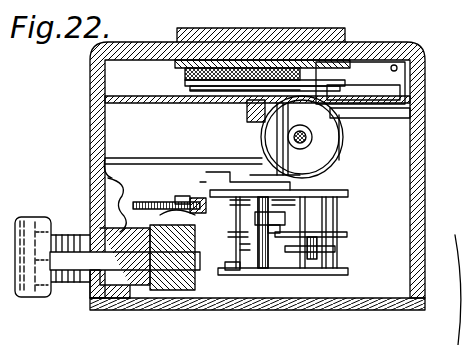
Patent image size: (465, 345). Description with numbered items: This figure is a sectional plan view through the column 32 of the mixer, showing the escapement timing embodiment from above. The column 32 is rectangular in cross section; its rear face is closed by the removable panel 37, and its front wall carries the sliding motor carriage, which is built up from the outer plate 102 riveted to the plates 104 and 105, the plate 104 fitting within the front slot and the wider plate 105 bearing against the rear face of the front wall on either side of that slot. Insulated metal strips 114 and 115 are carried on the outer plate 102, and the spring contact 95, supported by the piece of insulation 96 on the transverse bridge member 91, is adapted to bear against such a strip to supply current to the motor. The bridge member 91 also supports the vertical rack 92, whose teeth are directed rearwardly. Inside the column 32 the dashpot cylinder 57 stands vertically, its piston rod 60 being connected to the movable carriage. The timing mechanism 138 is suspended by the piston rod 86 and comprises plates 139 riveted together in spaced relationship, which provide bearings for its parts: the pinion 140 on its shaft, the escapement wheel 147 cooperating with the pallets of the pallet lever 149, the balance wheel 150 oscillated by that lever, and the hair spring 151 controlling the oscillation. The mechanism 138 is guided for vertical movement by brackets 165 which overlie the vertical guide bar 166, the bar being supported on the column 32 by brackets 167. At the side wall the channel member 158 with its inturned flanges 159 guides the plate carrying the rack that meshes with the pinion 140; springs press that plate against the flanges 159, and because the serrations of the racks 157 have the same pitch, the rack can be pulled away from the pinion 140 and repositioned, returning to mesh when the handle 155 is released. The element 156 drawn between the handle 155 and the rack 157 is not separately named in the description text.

The column 32 is at (427, 158).
The removable panel 37 is at (462, 245).
The dashpot cylinder 57 is at (330, 150).
The piston rod 60 is at (313, 138).
The piston rod 86 is at (195, 207).
The bridge member 91 is at (425, 103).
The vertical rack 92 is at (250, 105).
The spring contact 95 is at (212, 83).
The piece of insulation 96 is at (387, 92).
The outer plate 102 is at (344, 31).
The plate 104 is at (283, 50).
The plate 105 is at (185, 72).
The insulated metal strip 114 is at (305, 85).
The insulated metal strip 115 is at (190, 86).
The timing mechanism 138 is at (338, 216).
The plates 139 is at (343, 192).
The pinion 140 is at (252, 298).
The escapement wheel 147 is at (178, 211).
The pallet lever 149 is at (265, 216).
The balance wheel 150 is at (336, 235).
The hair spring 151 is at (332, 250).
The handle 155 is at (30, 216).
The sleeve 156 is at (62, 228).
The rack 157 is at (105, 206).
The channel member 158 is at (150, 300).
The inturned flanges 159 is at (170, 231).
The brackets 165 is at (215, 172).
The vertical guide bar 166 is at (256, 188).
The brackets 167 is at (162, 158).